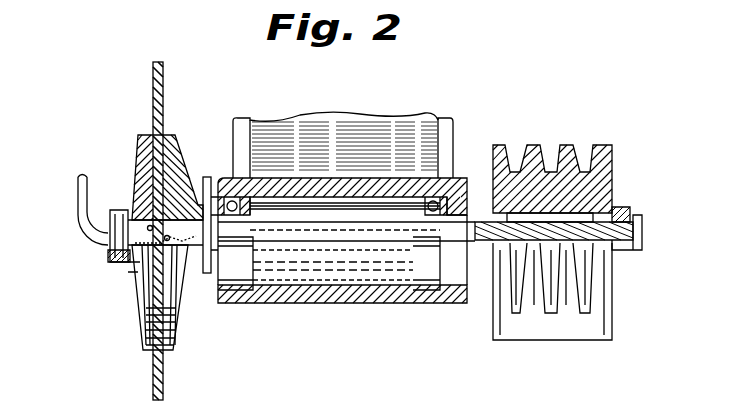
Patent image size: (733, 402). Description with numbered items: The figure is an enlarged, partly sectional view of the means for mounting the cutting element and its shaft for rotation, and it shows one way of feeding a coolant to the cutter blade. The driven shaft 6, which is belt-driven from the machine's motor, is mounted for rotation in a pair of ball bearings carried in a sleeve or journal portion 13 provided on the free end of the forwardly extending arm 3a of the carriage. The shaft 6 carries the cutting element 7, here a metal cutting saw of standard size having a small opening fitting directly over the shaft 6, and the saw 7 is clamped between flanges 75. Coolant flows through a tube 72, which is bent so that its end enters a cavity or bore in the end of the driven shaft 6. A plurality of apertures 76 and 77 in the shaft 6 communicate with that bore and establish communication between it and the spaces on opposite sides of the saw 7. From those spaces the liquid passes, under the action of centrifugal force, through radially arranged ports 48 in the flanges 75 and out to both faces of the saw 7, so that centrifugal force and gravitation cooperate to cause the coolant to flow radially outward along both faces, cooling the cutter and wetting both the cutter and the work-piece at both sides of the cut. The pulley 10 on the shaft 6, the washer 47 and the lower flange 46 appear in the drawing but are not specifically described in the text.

The cutting element 7 is at (163, 86).
The forwardly extending arm 3a is at (387, 132).
The sleeve or journal portion 13 is at (373, 186).
The pulley 10 is at (597, 186).
The shaft 6 is at (634, 232).
The flanges 75 is at (172, 156).
The aperture 77 is at (169, 237).
The aperture 76 is at (128, 210).
The tube 72 is at (78, 213).
The washer 47 is at (110, 252).
The lower flange 46 is at (121, 268).
The radial ports 48 is at (162, 328).